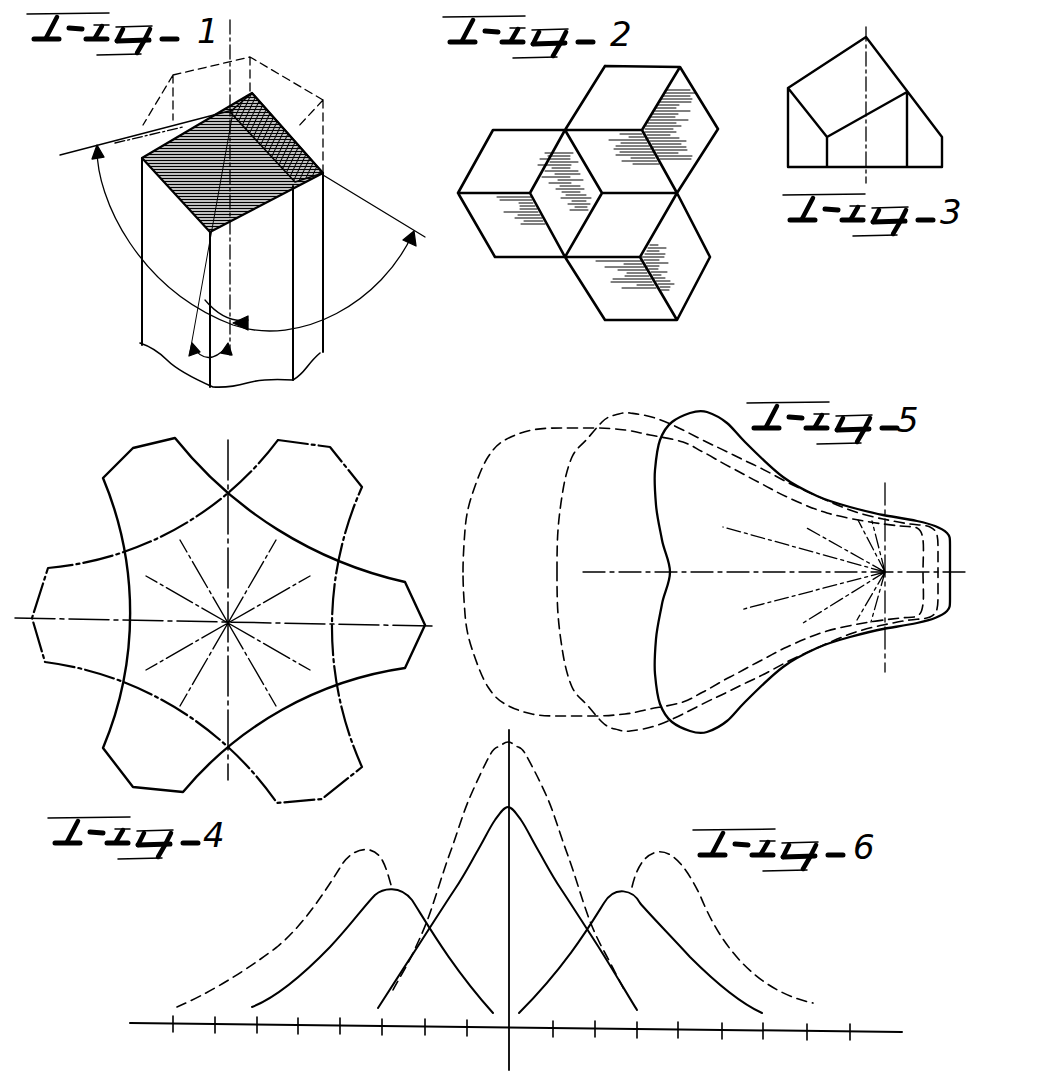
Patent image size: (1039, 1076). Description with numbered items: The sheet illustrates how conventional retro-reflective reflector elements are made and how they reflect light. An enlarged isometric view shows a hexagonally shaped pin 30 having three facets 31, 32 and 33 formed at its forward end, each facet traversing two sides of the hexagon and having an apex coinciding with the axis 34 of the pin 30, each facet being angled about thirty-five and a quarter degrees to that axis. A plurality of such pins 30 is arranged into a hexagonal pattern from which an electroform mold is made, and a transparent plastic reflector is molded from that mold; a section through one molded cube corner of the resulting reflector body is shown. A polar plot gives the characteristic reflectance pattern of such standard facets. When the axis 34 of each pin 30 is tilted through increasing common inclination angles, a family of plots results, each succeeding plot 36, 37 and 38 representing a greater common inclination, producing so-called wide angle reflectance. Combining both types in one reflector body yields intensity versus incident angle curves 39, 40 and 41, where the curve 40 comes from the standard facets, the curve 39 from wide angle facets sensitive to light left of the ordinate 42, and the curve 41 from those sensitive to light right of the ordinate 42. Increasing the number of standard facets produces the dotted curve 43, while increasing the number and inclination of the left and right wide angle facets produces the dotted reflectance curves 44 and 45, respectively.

In FIG. 1, the pin 30 is at (318, 370).
In FIG. 1, the facet 31 is at (270, 118).
In FIG. 1, the facet 32 is at (183, 127).
In FIG. 1, the facet 33 is at (190, 190).
In FIG. 1, the axis 34 is at (247, 267).
In FIG. 5, the plot 36 is at (790, 481).
In FIG. 5, the plot 37 is at (612, 422).
In FIG. 5, the plot 38 is at (501, 445).
In FIG. 6, the curve 39 is at (413, 900).
In FIG. 6, the curve 40 is at (561, 826).
In FIG. 6, the curve 41 is at (673, 900).
In FIG. 6, the ordinate 42 is at (512, 935).
In FIG. 6, the dotted curve 43 is at (540, 770).
In FIG. 6, the dotted reflectance curve 44 is at (392, 873).
In FIG. 6, the dotted reflectance curve 45 is at (670, 853).